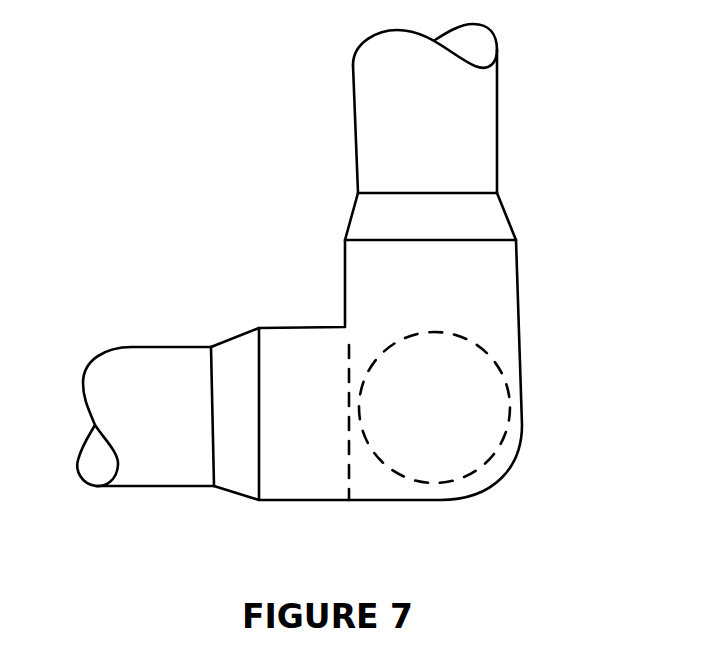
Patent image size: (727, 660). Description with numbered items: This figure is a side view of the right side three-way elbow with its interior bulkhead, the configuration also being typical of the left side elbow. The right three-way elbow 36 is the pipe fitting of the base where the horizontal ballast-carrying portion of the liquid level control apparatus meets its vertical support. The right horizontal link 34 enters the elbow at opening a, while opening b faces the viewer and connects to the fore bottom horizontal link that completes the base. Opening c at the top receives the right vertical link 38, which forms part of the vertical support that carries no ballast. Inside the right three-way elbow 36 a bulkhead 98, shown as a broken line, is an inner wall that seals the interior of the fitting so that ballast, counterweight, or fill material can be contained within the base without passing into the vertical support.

The right horizontal link 34 is at (148, 487).
The right 3-way elbow 36 is at (262, 327).
The right vertical link 38 is at (497, 98).
The bulkhead 98 is at (345, 347).
The opening a is at (211, 347).
The opening b is at (425, 333).
The opening c is at (497, 193).